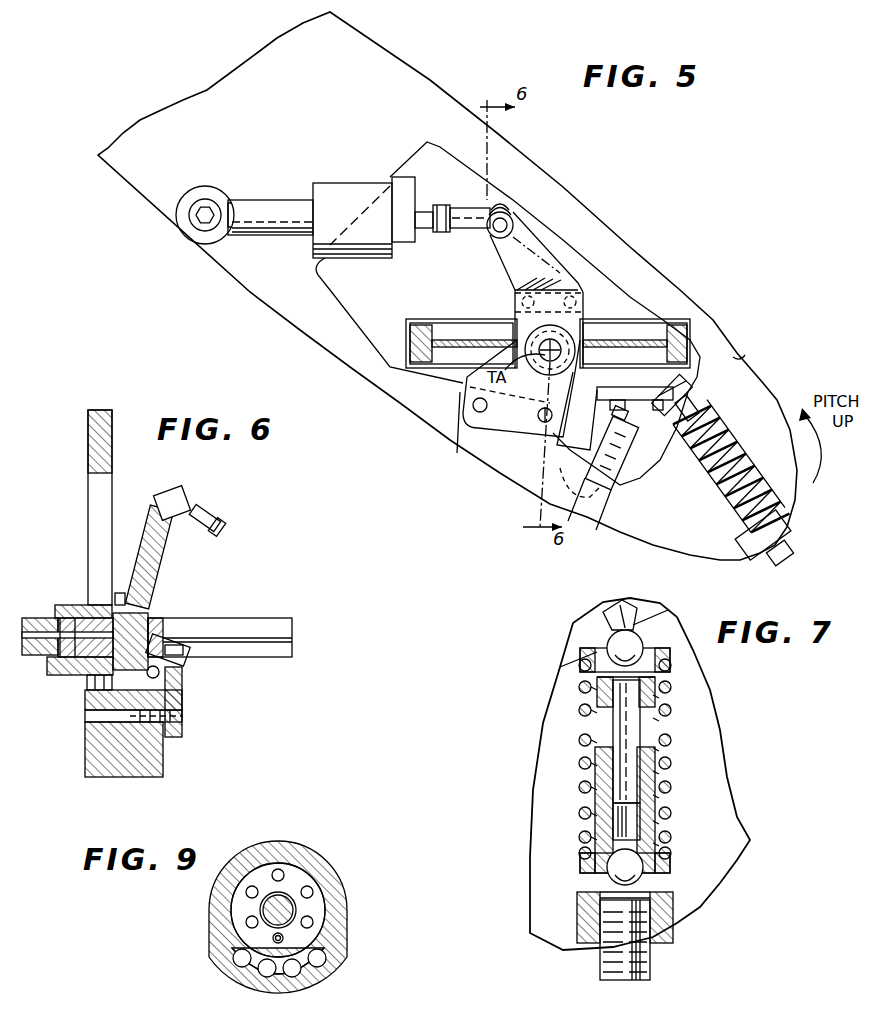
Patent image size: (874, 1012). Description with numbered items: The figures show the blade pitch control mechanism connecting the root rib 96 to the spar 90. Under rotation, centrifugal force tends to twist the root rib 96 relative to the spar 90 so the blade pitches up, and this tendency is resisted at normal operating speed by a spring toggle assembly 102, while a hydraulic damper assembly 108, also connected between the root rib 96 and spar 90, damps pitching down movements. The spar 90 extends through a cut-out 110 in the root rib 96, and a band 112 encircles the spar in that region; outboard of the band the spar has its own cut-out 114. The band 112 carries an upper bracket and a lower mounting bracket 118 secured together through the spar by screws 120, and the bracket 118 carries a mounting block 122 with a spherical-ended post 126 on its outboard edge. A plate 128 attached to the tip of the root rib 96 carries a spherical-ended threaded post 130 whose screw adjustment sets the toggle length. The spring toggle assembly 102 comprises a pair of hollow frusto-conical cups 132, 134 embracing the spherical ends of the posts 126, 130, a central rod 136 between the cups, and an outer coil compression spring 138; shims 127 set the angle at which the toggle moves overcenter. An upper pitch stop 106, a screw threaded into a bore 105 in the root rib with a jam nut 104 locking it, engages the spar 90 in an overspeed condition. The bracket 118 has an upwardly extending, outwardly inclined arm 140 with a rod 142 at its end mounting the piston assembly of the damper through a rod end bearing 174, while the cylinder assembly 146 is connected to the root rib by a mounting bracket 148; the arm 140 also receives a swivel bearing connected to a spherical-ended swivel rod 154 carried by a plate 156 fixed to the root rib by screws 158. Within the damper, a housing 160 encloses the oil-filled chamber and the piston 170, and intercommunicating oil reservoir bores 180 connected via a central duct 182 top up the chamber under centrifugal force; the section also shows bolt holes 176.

In FIG. 5, the root rib 96 is at (362, 47).
In FIG. 6, the root rib 96 is at (88, 443).
In FIG. 5, the hydraulic damper assembly 108 is at (340, 200).
In FIG. 5, the mounting bracket 148 is at (185, 200).
In FIG. 5, the cylinder assembly 146 is at (273, 240).
In FIG. 5, the rod end bearing 174 is at (463, 213).
In FIG. 6, the rod end bearing 174 is at (207, 533).
In FIG. 5, the arm 140 is at (503, 252).
In FIG. 6, the arm 140 is at (186, 544).
In FIG. 5, the cut-out 110 is at (580, 253).
In FIG. 5, the spar 90 is at (545, 323).
In FIG. 6, the spar 90 is at (234, 632).
In FIG. 5, the band 112 is at (443, 320).
In FIG. 5, the cut-out 114 is at (593, 340).
In FIG. 6, the cut-out 114 is at (257, 633).
In FIG. 5, the plate 156 is at (463, 395).
In FIG. 6, the plate 156 is at (182, 685).
In FIG. 5, the swivel rod 154 is at (541, 356).
In FIG. 6, the swivel rod 154 is at (183, 650).
In FIG. 5, the mounting block 122 is at (527, 412).
In FIG. 5, the shims 127 is at (733, 357).
In FIG. 5, the post 126 is at (693, 390).
In FIG. 6, the post 126 is at (182, 693).
In FIG. 7, the post 126 is at (603, 617).
In FIG. 5, the upper pitch stop 106 is at (630, 420).
In FIG. 5, the bore 105 is at (576, 481).
In FIG. 5, the jam nut 104 is at (630, 467).
In FIG. 5, the spring toggle assembly 102 is at (748, 491).
In FIG. 7, the spring toggle assembly 102 is at (597, 790).
In FIG. 5, the threaded post 130 is at (783, 540).
In FIG. 7, the threaded post 130 is at (647, 957).
In FIG. 5, the plate 128 is at (760, 540).
In FIG. 7, the plate 128 is at (580, 937).
In FIG. 6, the rod 142 is at (197, 503).
In FIG. 6, the lower mounting bracket 118 is at (98, 600).
In FIG. 6, the screws 120 is at (43, 630).
In FIG. 6, the screws 158 is at (87, 737).
In FIG. 7, the frusto-conical cup 134 is at (655, 703).
In FIG. 7, the central rod 136 is at (620, 725).
In FIG. 7, the coil compression spring 138 is at (580, 835).
In FIG. 7, the frusto-conical cup 132 is at (657, 802).
In FIG. 9, the bolt hole 176 is at (287, 873).
In FIG. 9, the piston 170 is at (279, 903).
In FIG. 9, the housing 160 is at (213, 927).
In FIG. 9, the central duct 182 is at (287, 940).
In FIG. 9, the oil reservoir bores 180 is at (243, 963).